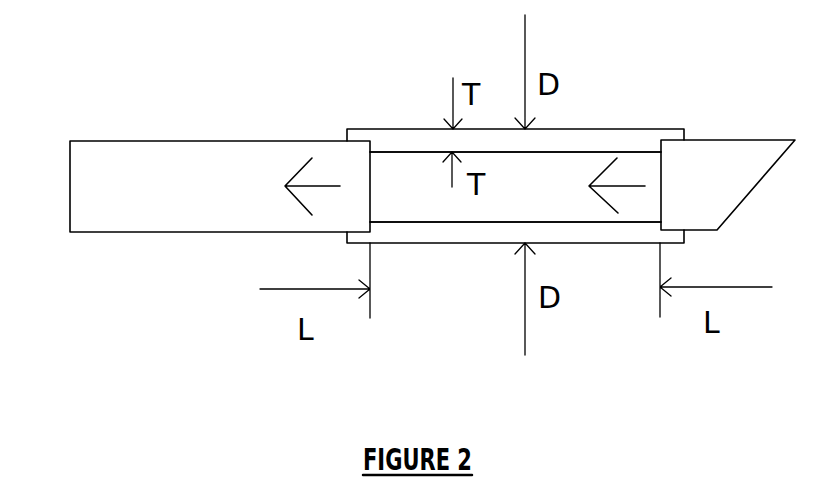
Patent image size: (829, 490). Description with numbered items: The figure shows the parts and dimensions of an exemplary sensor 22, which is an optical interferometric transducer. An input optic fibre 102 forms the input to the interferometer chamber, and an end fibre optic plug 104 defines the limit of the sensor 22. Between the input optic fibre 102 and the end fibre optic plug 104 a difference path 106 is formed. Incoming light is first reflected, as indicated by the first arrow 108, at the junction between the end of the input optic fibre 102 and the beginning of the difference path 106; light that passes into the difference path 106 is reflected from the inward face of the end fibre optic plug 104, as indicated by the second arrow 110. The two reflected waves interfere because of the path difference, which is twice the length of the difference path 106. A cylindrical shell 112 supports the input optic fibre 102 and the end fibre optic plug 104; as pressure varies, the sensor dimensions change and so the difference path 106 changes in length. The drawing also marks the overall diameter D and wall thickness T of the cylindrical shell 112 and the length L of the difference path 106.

The input optic fibre 102 is at (143, 188).
The end fibre optic plug 104 is at (704, 158).
The difference path 106 is at (417, 184).
The first arrow 108 is at (310, 183).
The second arrow 110 is at (619, 185).
The cylindrical shell 112 is at (452, 243).
The sensor 22 is at (557, 190).